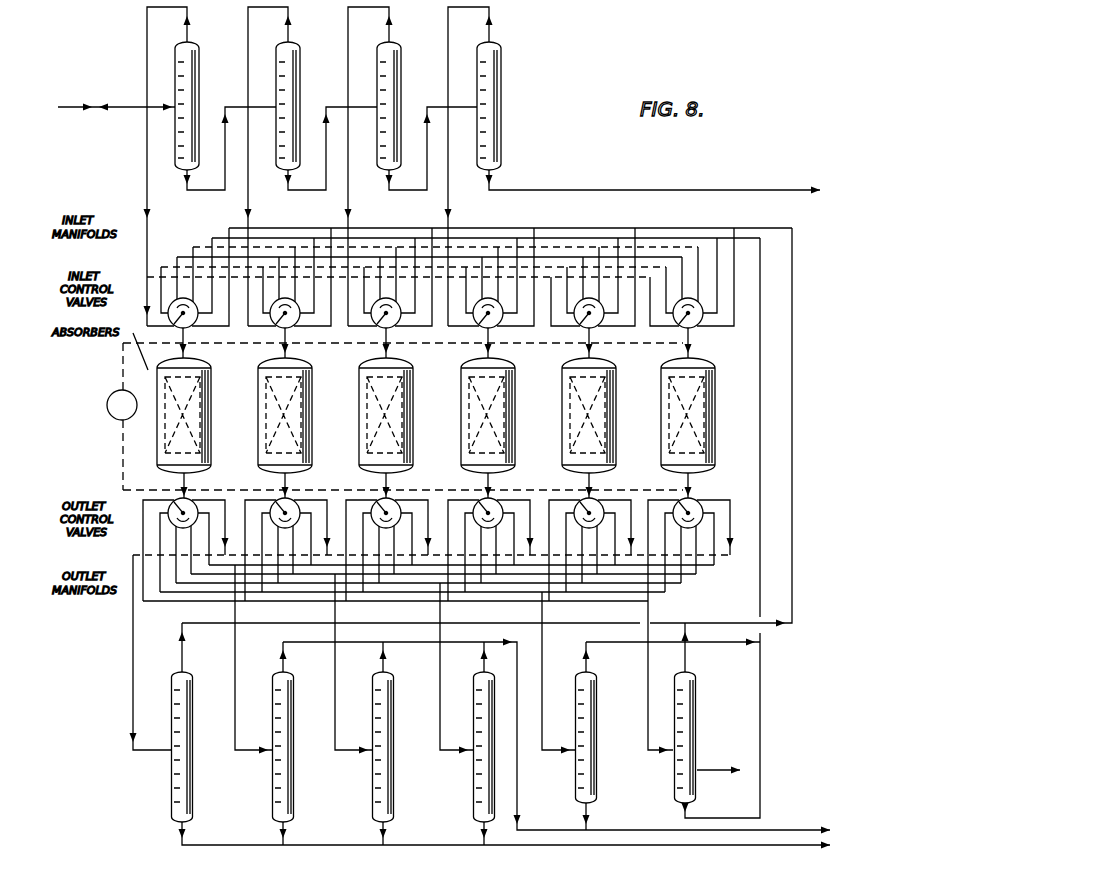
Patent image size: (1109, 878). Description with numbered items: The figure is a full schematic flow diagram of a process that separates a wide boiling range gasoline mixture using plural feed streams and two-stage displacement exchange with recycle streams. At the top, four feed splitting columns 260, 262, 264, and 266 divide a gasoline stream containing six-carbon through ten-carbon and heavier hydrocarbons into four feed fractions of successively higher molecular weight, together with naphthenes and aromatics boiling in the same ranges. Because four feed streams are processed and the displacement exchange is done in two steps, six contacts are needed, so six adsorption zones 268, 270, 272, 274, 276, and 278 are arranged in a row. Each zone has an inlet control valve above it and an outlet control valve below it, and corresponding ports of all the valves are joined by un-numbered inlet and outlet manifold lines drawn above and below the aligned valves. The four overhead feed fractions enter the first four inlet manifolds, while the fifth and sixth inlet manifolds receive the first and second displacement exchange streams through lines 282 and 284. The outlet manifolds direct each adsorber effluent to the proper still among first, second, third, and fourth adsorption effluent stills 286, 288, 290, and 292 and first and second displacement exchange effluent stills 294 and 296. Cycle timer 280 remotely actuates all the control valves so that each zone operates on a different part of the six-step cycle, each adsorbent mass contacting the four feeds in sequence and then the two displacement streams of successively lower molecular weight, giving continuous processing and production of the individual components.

The feed splitting column 260 is at (198, 46).
The feed splitting column 262 is at (299, 46).
The feed splitting column 264 is at (400, 46).
The feed splitting column 266 is at (500, 50).
The adsorption zone 268 is at (196, 376).
The adsorption zone 270 is at (298, 376).
The adsorption zone 272 is at (399, 376).
The adsorption zone 274 is at (500, 376).
The adsorption zone 276 is at (601, 376).
The adsorption zone 278 is at (700, 376).
The cycle timer 280 is at (111, 417).
The line 282 is at (765, 288).
The line 284 is at (793, 322).
The first adsorption effluent still 286 is at (190, 672).
The second adsorption effluent still 288 is at (293, 674).
The third adsorption effluent still 290 is at (392, 672).
The fourth adsorption effluent still 292 is at (495, 672).
The first displacement exchange effluent still 294 is at (594, 672).
The second displacement exchange effluent still 296 is at (695, 675).